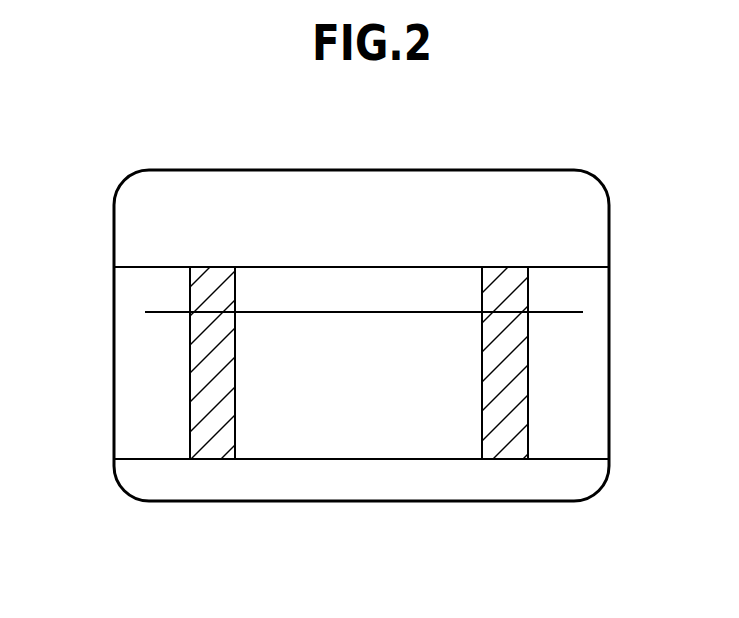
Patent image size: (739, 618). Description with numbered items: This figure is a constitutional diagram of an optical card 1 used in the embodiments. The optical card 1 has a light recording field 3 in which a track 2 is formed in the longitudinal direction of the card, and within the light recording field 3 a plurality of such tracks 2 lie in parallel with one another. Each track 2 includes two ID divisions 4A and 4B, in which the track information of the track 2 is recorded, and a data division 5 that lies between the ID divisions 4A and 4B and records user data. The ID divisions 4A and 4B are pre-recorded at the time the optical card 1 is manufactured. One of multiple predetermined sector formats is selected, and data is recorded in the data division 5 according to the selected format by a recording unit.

The optical card 1 is at (470, 158).
The track 2 is at (325, 310).
The light recording field 3 is at (87, 337).
The ID division 4A is at (218, 272).
The ID division 4B is at (508, 273).
The data division 5 is at (422, 442).